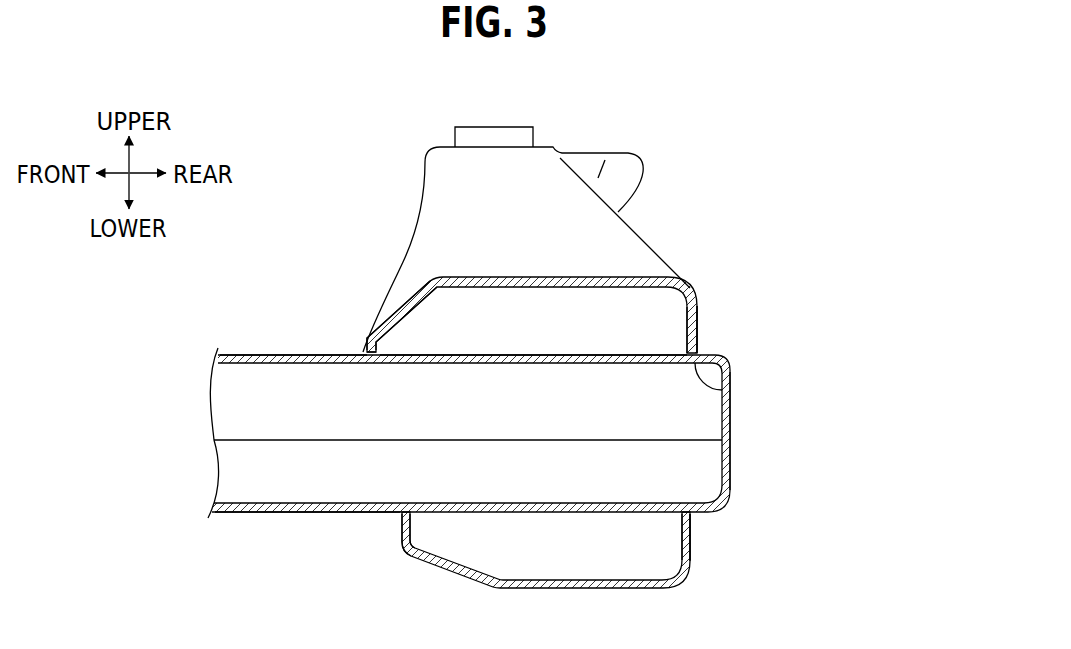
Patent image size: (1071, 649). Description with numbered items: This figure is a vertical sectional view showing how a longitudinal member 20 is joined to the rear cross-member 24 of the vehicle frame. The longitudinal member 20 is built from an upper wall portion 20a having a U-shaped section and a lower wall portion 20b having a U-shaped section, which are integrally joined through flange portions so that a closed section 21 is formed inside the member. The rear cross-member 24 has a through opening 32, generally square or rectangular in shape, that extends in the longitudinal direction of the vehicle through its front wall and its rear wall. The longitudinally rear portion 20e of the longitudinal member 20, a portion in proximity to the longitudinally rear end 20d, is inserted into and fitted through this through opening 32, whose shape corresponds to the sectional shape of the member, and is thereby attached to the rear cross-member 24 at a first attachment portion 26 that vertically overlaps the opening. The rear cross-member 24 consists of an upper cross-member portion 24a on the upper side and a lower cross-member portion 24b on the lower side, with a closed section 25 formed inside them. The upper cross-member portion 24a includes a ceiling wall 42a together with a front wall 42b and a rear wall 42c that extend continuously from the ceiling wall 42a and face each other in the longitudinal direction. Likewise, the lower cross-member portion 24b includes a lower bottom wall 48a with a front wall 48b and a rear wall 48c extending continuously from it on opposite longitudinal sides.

The longitudinal member 20 is at (509, 425).
The upper wall portion 20a is at (307, 354).
The lower wall portion 20b is at (275, 516).
The longitudinally rear end 20d is at (734, 455).
The longitudinally rear portion 20e is at (507, 353).
The closed section 21 is at (540, 419).
The rear cross-member 24 is at (577, 343).
The upper cross-member portion 24a is at (705, 306).
The lower cross-member portion 24b is at (697, 537).
The closed section 25 is at (597, 331).
The first attachment portion 26 is at (700, 283).
The through opening 32 is at (370, 362).
The ceiling wall 42a is at (552, 290).
The front wall 42b is at (366, 348).
The rear wall 42c is at (699, 337).
The lower bottom wall 48a is at (547, 578).
The front wall 48b is at (401, 530).
The rear wall 48c is at (693, 553).